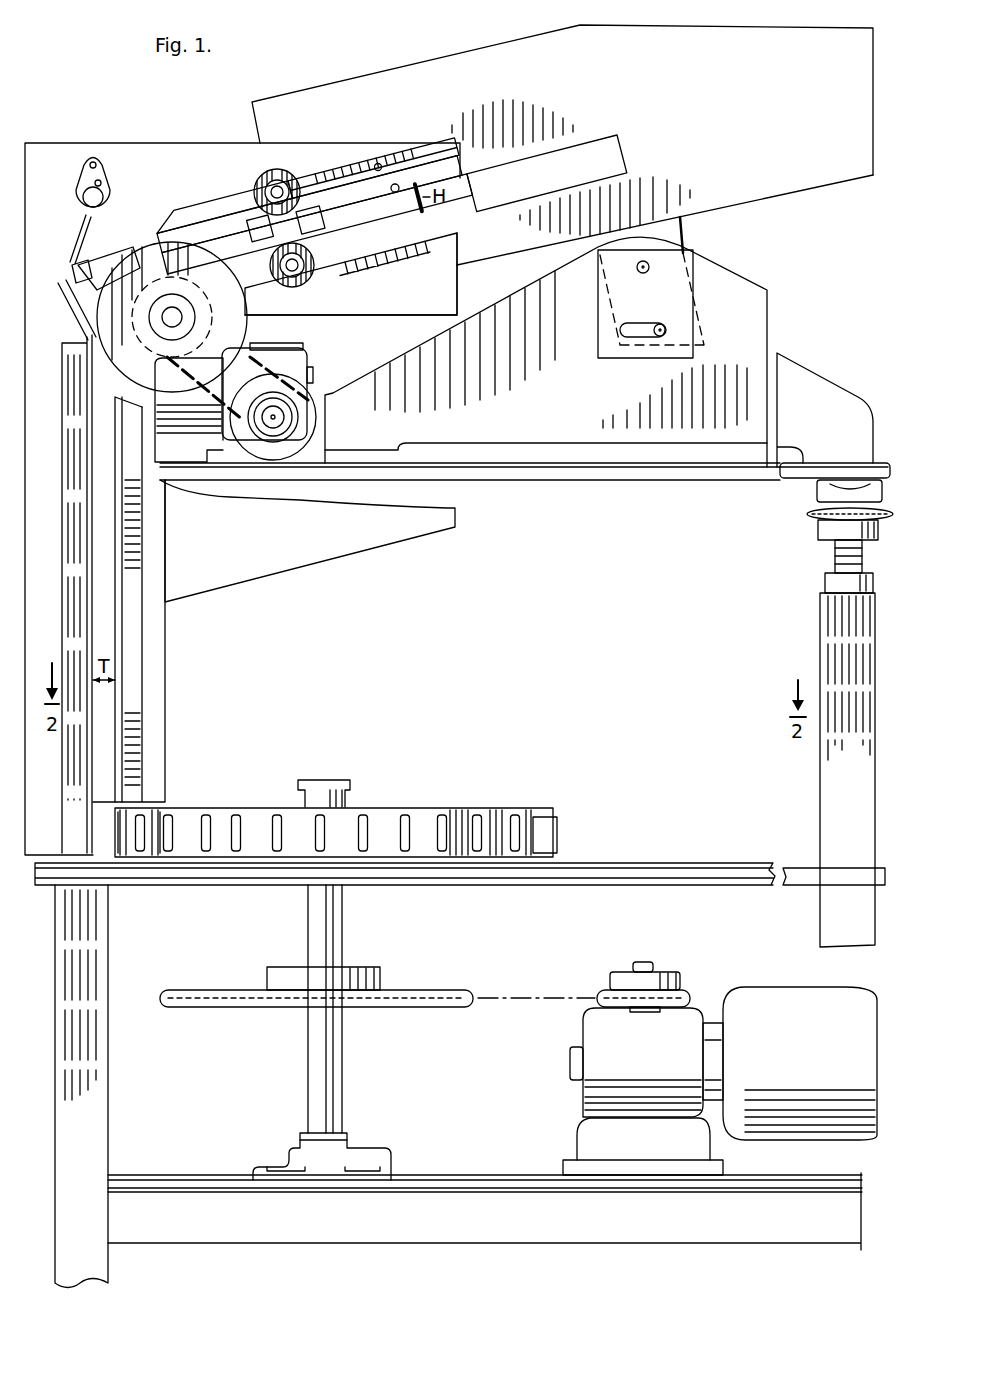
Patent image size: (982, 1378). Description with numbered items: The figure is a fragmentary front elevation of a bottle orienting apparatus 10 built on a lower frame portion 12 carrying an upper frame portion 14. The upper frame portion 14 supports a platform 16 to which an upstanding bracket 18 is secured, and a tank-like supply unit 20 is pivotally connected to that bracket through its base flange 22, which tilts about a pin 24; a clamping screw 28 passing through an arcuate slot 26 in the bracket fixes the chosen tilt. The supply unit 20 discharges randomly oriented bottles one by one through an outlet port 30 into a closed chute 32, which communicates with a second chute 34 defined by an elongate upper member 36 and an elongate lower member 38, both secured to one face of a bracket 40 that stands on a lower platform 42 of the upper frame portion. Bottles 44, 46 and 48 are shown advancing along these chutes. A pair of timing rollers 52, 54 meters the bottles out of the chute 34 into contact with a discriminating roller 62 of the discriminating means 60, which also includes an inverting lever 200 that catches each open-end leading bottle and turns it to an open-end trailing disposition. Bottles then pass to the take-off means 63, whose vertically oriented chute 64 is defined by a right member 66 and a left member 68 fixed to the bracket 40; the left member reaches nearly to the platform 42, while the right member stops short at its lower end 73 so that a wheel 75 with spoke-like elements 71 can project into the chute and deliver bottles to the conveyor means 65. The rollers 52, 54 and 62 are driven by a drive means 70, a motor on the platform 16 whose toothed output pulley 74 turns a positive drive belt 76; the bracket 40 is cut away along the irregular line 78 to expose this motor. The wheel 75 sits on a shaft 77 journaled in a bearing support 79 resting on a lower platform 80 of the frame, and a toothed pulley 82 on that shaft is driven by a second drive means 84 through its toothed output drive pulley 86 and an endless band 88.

The bottle orienting apparatus 10 is at (806, 268).
The lower frame portion 12 is at (124, 1090).
The upper frame portion 14 is at (818, 790).
The platform 16 is at (790, 479).
The upstanding bracket 18 is at (790, 367).
The supply unit 20 is at (783, 124).
The base flange 22 is at (683, 232).
The pin 24 is at (637, 268).
The arcuate slot 26 is at (630, 338).
The clamping screw 28 is at (658, 340).
The outlet port 30 is at (622, 157).
The chute 32 is at (528, 156).
The chute 34 is at (398, 183).
The elongate upper member 36 is at (379, 162).
The elongate lower member 38 is at (385, 248).
The bracket 40 is at (180, 171).
The lower platform 42 is at (715, 866).
The bottle 44 is at (122, 250).
The bottle 46 is at (217, 230).
The bottle 48 is at (303, 182).
The timing roller 52 is at (280, 168).
The timing roller 54 is at (315, 270).
The discriminating means 60 is at (68, 182).
The discriminating roller 62 is at (240, 302).
The take-off means 63 is at (130, 550).
The vertically oriented chute 64 is at (118, 573).
The conveyor means 65 is at (418, 800).
The right member 66 is at (120, 655).
The left member 68 is at (85, 607).
The drive means 70 is at (300, 352).
The spoke-like elements 71 is at (193, 815).
The lower end 73 is at (152, 802).
The toothed output pulley 74 is at (300, 398).
The wheel 75 is at (254, 807).
The positive drive belt 76 is at (190, 412).
The shaft 77 is at (338, 915).
The cut-away line 78 is at (443, 503).
The bearing support 79 is at (348, 1134).
The lower platform 80 is at (472, 1177).
The toothed pulley 82 is at (451, 989).
The drive means 84 is at (760, 986).
The toothed output drive pulley 86 is at (684, 989).
The endless chain or band 88 is at (520, 995).
The lever 200 is at (82, 222).